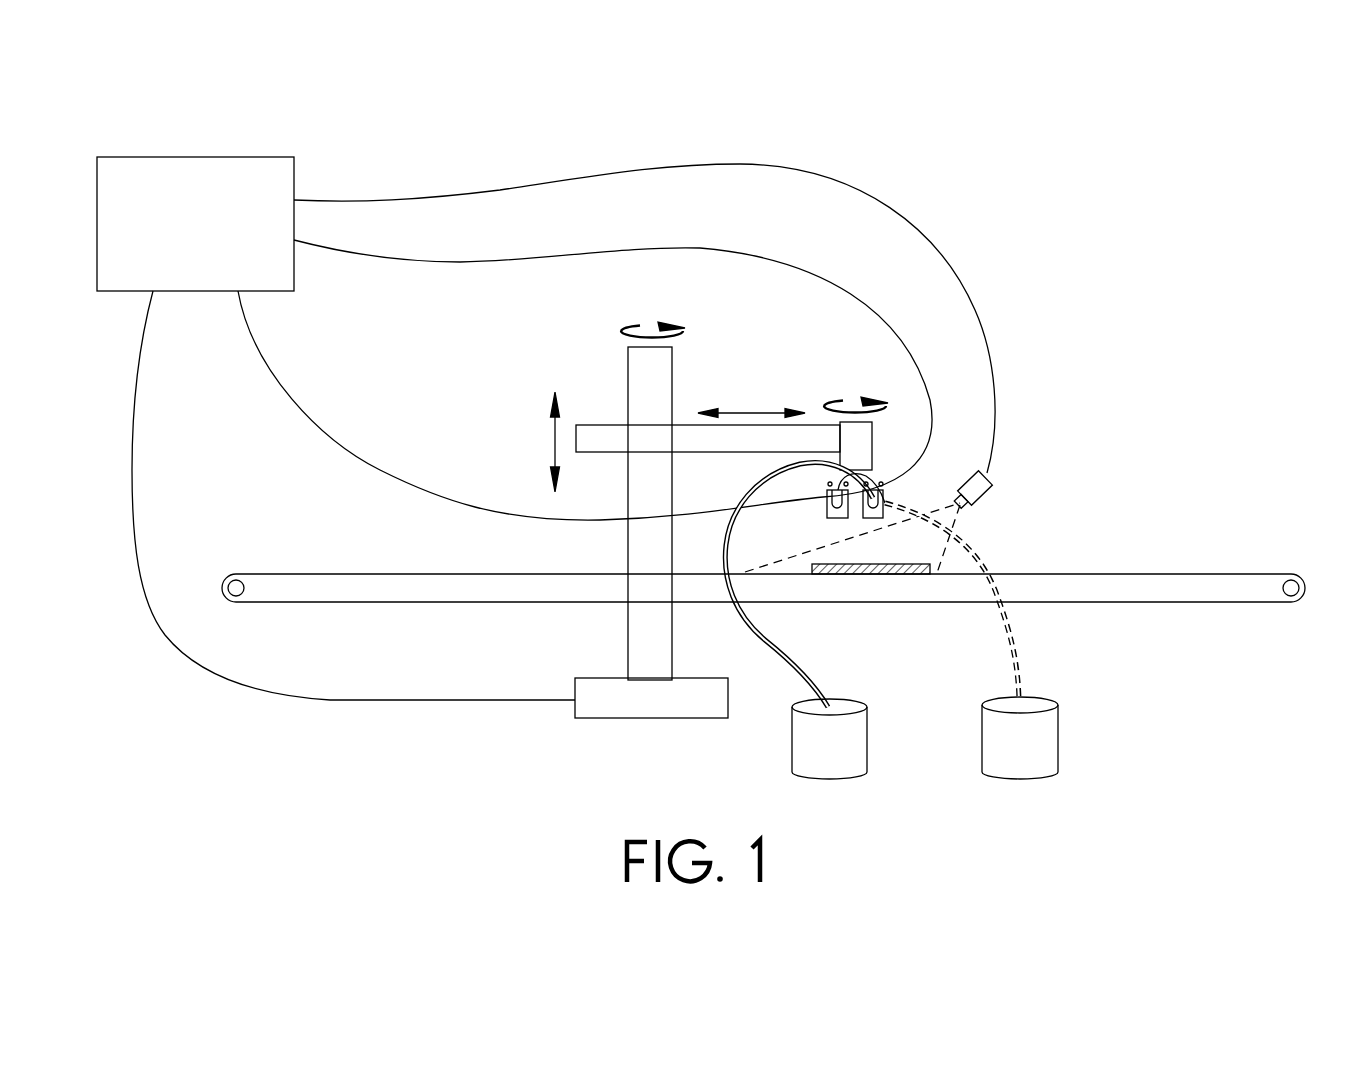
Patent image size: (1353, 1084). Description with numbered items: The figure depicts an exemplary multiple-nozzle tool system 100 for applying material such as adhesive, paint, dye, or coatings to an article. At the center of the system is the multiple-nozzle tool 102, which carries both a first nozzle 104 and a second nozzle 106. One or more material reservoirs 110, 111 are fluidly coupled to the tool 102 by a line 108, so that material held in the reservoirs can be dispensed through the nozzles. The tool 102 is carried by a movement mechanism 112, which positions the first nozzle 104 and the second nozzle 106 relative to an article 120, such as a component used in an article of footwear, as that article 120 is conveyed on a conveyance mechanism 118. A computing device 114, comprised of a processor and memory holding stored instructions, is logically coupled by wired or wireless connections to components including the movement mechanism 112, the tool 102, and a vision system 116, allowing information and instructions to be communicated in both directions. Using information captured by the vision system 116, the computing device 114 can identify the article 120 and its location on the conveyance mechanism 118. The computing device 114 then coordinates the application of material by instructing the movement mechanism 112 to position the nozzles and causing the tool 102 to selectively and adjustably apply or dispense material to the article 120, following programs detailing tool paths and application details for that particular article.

The multiple-nozzle tool system 100 is at (1152, 195).
The multiple-nozzle tool 102 is at (886, 448).
The first nozzle 104 is at (828, 510).
The second nozzle 106 is at (878, 514).
The line 108 is at (781, 654).
The material reservoir 110 is at (836, 770).
The material reservoir 111 is at (1026, 770).
The movement mechanism 112 is at (650, 705).
The computing device 114 is at (183, 157).
The vision system 116 is at (988, 488).
The conveyance mechanism 118 is at (370, 578).
The article 120 is at (874, 576).